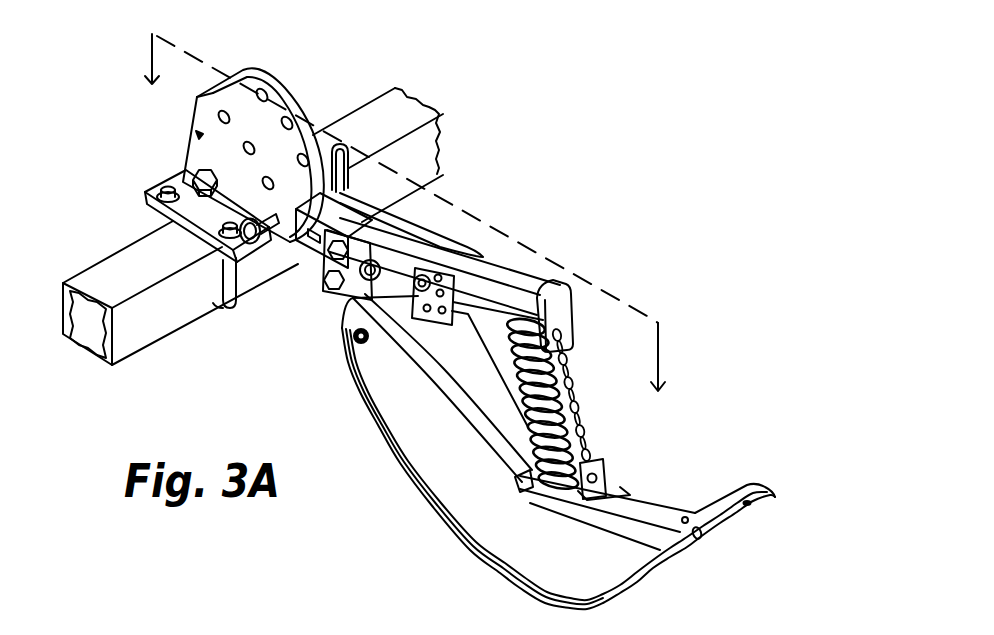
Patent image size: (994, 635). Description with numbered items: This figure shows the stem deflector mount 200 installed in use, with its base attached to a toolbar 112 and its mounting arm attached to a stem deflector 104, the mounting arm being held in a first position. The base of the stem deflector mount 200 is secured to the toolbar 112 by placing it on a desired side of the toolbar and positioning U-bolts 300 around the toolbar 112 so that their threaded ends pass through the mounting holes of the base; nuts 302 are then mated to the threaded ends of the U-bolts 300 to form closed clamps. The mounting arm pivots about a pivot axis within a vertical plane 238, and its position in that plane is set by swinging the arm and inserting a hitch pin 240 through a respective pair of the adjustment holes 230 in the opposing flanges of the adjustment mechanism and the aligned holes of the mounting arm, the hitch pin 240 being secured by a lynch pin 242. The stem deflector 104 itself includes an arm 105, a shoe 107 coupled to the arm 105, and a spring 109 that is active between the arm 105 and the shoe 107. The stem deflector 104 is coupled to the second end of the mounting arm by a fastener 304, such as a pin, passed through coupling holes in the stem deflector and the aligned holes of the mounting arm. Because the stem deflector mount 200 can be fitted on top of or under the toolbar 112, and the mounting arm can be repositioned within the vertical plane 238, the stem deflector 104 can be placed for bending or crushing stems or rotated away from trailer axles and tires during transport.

The stem deflector 104 is at (705, 389).
The arm 105 is at (478, 236).
The shoe 107 is at (420, 442).
The spring 109 is at (530, 422).
The toolbar 112 is at (418, 117).
The stem deflector mount 200 is at (120, 106).
The adjustment holes 230 is at (246, 150).
The vertical plane 238 is at (222, 71).
The hitch pin 240 is at (383, 191).
The lynch pin 242 is at (258, 244).
The U-bolts 300 is at (226, 306).
The nuts 302 is at (222, 230).
The fastener 304 is at (322, 263).